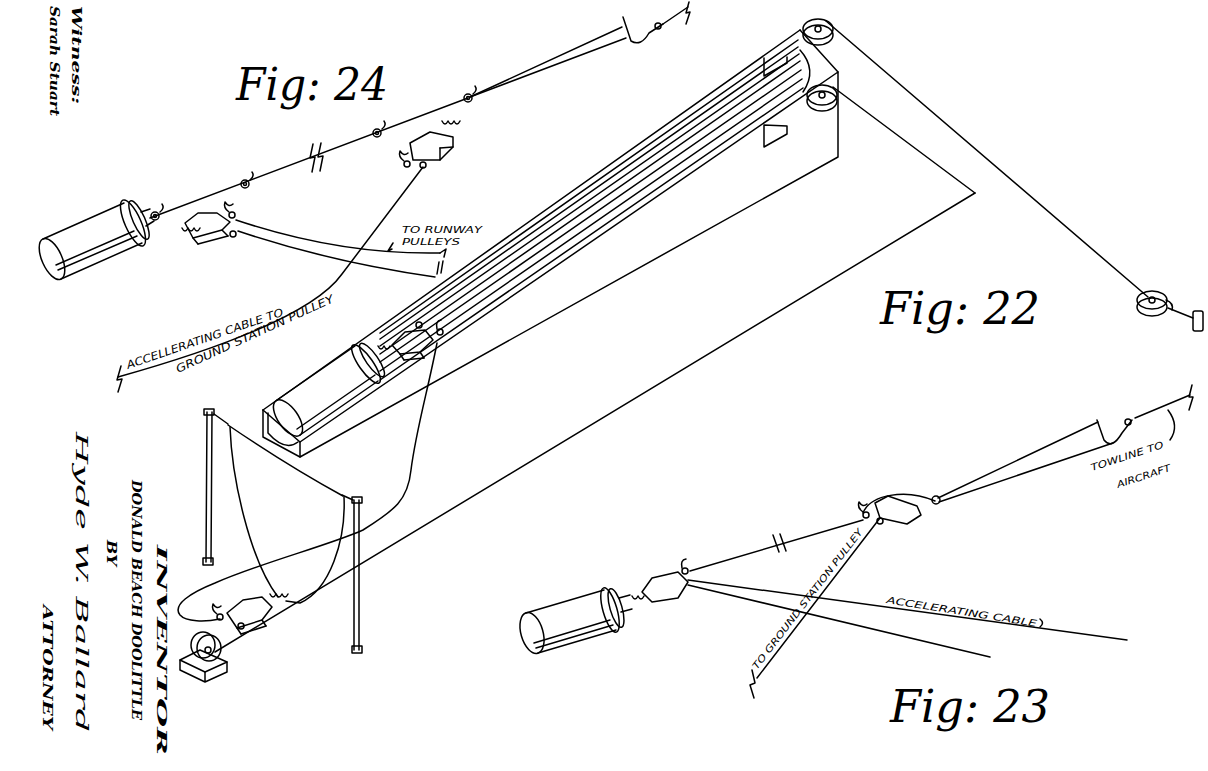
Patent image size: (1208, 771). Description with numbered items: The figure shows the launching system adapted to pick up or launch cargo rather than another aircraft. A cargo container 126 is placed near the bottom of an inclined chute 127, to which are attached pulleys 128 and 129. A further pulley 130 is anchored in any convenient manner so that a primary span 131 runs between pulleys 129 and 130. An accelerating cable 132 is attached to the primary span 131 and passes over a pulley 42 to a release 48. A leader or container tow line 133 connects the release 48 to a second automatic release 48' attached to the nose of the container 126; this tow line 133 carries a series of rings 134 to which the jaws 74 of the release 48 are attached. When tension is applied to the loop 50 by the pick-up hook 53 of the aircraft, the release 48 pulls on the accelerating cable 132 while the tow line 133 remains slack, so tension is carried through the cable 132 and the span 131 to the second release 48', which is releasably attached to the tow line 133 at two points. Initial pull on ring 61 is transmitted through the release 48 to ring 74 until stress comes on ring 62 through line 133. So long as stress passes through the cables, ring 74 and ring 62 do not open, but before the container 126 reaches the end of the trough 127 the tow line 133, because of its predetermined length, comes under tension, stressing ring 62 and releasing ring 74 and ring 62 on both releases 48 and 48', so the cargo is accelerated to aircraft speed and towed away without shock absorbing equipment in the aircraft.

In FIG. 22, the pulley 42 is at (222, 679).
In FIG. 24, the release 48 is at (446, 146).
In FIG. 22, the release 48 is at (262, 623).
In FIG. 23, the release 48 is at (899, 528).
In FIG. 24, the second automatic release 48' is at (207, 241).
In FIG. 22, the second automatic release 48' is at (440, 359).
In FIG. 23, the second automatic release 48' is at (665, 596).
In FIG. 22, the loop 50 is at (323, 477).
In FIG. 24, the pick-up hook 53 is at (650, 40).
In FIG. 24, the ring 61 is at (430, 167).
In FIG. 22, the ring 61 is at (417, 322).
In FIG. 23, the ring 61 is at (880, 530).
In FIG. 24, the ring 62 is at (405, 166).
In FIG. 22, the ring 62 is at (444, 330).
In FIG. 23, the ring 62 is at (683, 567).
In FIG. 24, the jaws / ring 74 is at (450, 124).
In FIG. 22, the jaws / ring 74 is at (380, 347).
In FIG. 23, the jaws / ring 74 is at (942, 518).
In FIG. 24, the cargo container 126 is at (100, 232).
In FIG. 22, the cargo container 126 is at (306, 393).
In FIG. 23, the cargo container 126 is at (572, 612).
In FIG. 22, the inclined chute 127 is at (690, 240).
In FIG. 22, the pulley 128 is at (835, 26).
In FIG. 22, the pulley 129 is at (840, 94).
In FIG. 22, the pulley 130 is at (1167, 296).
In FIG. 22, the primary span 131 is at (938, 170).
In FIG. 22, the accelerating cable 132 is at (736, 346).
In FIG. 24, the tow line / leader 133 is at (281, 168).
In FIG. 22, the tow line / leader 133 is at (412, 458).
In FIG. 23, the tow line / leader 133 is at (798, 536).
In FIG. 24, the rings 134 is at (447, 85).